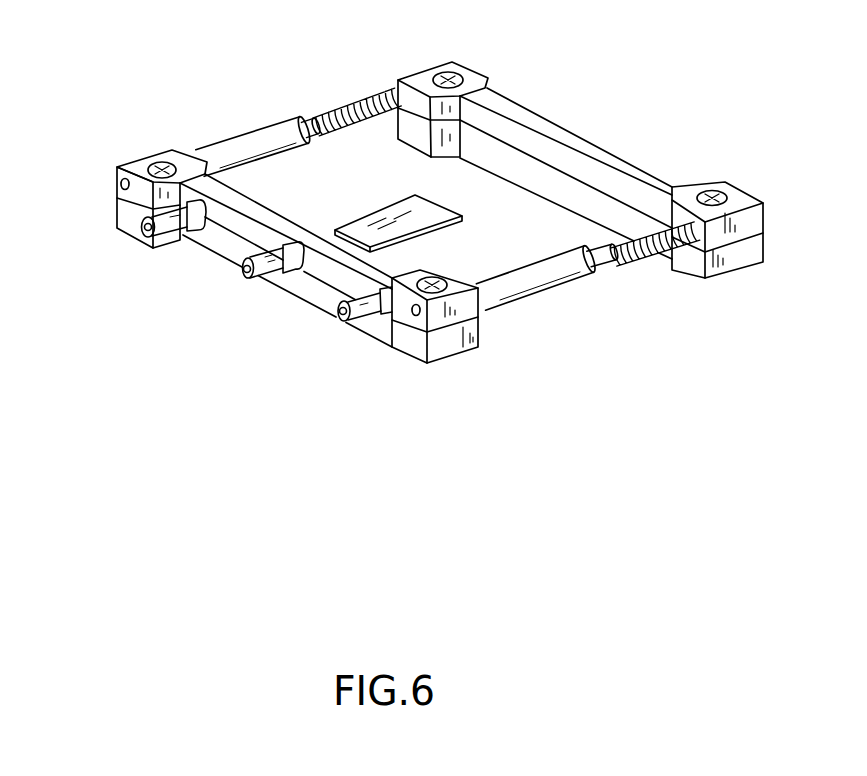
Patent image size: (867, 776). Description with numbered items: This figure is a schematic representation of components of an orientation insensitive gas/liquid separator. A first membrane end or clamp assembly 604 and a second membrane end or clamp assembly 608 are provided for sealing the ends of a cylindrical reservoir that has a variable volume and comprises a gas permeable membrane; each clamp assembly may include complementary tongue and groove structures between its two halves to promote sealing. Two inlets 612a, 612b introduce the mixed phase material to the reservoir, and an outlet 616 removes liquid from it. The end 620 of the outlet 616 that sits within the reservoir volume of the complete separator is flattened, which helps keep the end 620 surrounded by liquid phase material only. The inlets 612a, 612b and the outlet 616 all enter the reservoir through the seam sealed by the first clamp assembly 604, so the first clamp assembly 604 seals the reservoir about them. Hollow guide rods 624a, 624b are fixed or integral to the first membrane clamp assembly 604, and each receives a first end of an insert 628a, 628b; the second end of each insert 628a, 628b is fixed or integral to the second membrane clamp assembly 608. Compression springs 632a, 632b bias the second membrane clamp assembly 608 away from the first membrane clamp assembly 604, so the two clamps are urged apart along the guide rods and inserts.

The first membrane end or clamp assembly 604 is at (312, 288).
The second membrane end or clamp assembly 608 is at (655, 173).
The inlet 612a is at (148, 228).
The inlet 612b is at (342, 320).
The outlet 616 is at (247, 275).
The end of the outlet 620 is at (437, 214).
The hollow guide rod 624a is at (225, 150).
The hollow guide rod 624b is at (498, 290).
The insert 628a is at (346, 110).
The insert 628b is at (613, 255).
The compression spring 632a is at (372, 97).
The compression spring 632b is at (673, 246).